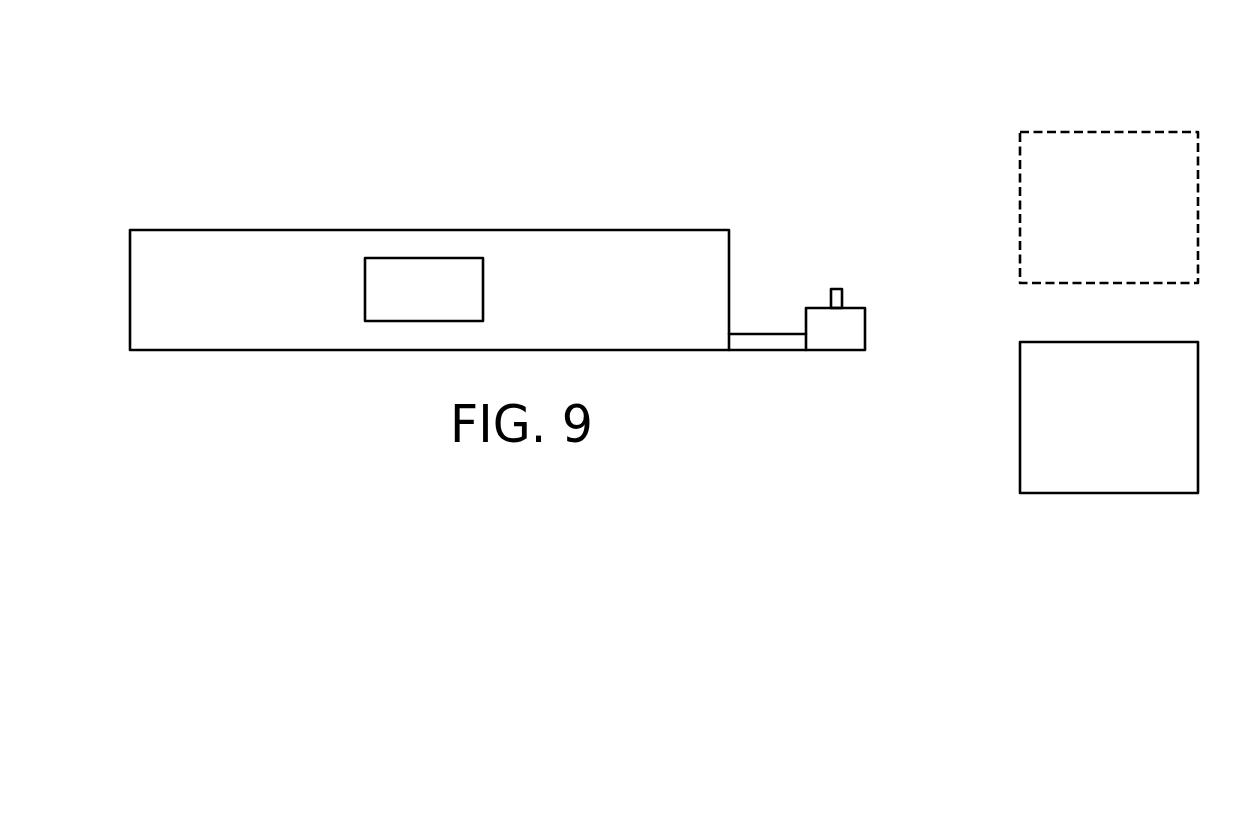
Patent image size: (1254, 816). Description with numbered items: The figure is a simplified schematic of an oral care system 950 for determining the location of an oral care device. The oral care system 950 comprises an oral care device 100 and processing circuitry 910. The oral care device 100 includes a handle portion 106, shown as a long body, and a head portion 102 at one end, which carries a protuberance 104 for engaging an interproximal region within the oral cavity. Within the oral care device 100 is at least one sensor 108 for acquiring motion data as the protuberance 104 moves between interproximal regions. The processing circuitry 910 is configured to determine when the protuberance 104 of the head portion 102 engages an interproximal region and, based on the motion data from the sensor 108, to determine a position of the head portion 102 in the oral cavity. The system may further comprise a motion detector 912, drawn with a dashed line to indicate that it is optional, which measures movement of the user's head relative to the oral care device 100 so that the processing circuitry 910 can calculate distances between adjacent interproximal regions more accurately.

The oral care system 950 is at (118, 92).
The oral care device 100 is at (729, 222).
The head portion 102 is at (865, 327).
The protuberance 104 is at (836, 289).
The handle portion 106 is at (222, 230).
The sensor 108 is at (422, 258).
The processing circuitry 910 is at (1108, 493).
The motion detector 912 is at (1110, 132).